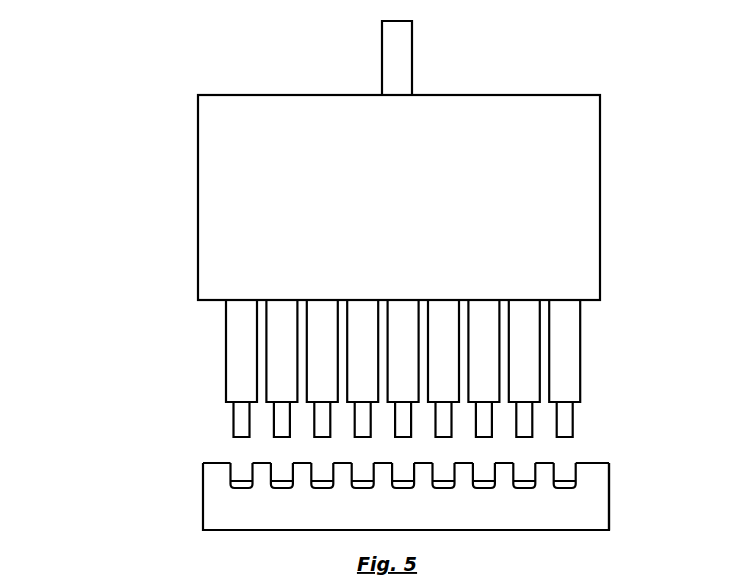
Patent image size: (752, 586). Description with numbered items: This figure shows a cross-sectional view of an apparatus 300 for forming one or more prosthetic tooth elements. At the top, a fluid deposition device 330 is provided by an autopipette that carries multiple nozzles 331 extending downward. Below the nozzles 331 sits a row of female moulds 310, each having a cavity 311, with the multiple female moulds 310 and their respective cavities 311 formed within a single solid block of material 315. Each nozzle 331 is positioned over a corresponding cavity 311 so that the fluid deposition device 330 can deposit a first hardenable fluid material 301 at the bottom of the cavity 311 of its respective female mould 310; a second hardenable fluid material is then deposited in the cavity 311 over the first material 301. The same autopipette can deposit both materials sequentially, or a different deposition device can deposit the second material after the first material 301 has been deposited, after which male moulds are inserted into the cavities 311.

The apparatus 300 is at (112, 158).
The fluid deposition device 330 is at (215, 178).
The nozzles 331 is at (237, 348).
The female mould 310 is at (229, 486).
The cavity 311 is at (229, 475).
The first hardenable fluid material 301 is at (238, 488).
The solid block of material 315 is at (598, 500).